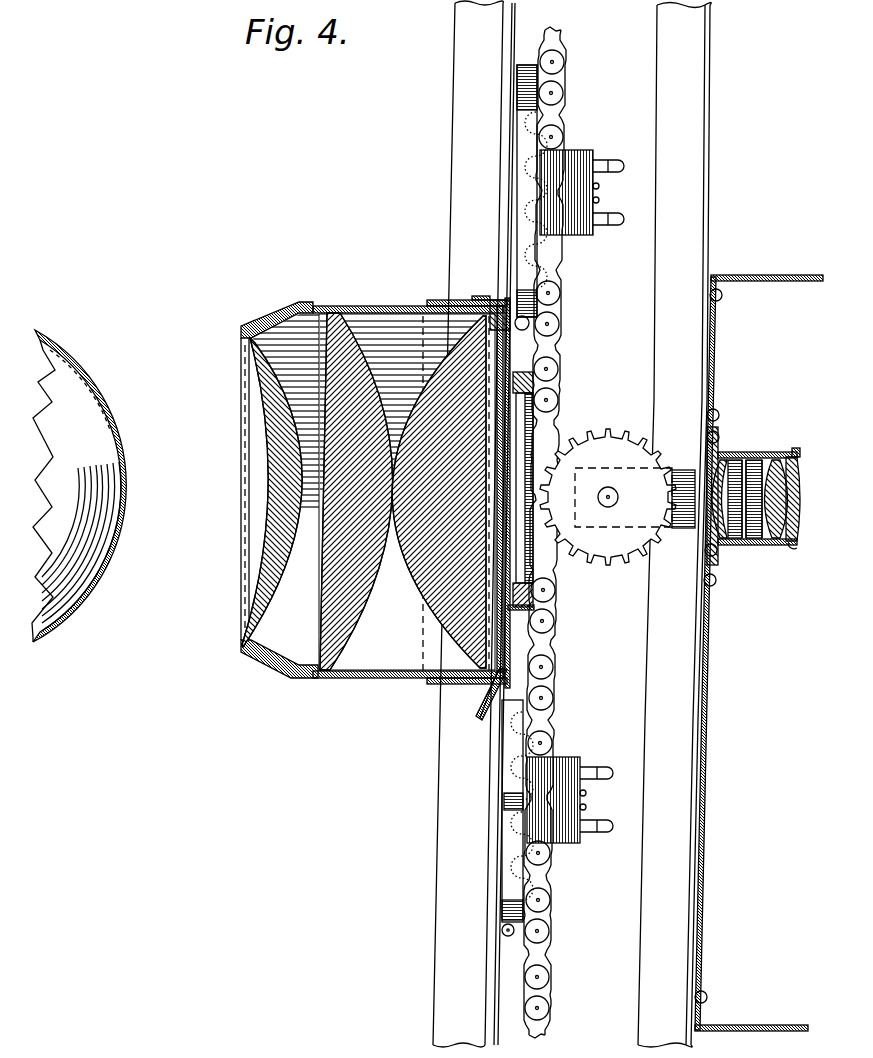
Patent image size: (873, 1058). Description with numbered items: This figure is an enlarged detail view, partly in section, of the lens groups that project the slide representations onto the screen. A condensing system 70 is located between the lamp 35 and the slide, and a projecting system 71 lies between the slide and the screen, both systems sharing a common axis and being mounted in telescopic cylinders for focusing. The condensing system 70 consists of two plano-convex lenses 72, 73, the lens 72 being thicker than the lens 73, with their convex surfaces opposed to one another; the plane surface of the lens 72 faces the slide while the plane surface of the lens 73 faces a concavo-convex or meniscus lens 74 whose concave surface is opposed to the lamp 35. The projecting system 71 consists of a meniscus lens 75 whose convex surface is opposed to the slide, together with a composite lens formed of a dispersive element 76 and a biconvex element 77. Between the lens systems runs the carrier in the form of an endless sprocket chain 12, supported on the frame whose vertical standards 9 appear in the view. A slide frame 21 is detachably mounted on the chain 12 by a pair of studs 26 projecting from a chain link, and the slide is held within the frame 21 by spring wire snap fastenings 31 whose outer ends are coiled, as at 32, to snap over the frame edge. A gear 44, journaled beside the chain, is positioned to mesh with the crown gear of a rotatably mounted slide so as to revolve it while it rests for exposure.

The vertical standards 9 is at (470, 189).
The endless sprocket chain 12 is at (537, 957).
The slide frame 21 is at (527, 118).
The studs 26 is at (617, 183).
The spring wire snap fastening 31 is at (502, 892).
The coil 32 is at (502, 933).
The lamp 35 is at (127, 476).
The gear 44 is at (597, 445).
The condensing system 70 is at (385, 490).
The projecting system 71 is at (734, 506).
The plano-convex lens 72 is at (448, 620).
The plano-convex lens 73 is at (345, 627).
The meniscus lens 74 is at (274, 567).
The meniscus lens 75 is at (718, 523).
The dispersive element 76 is at (767, 547).
The biconvex element 77 is at (800, 538).